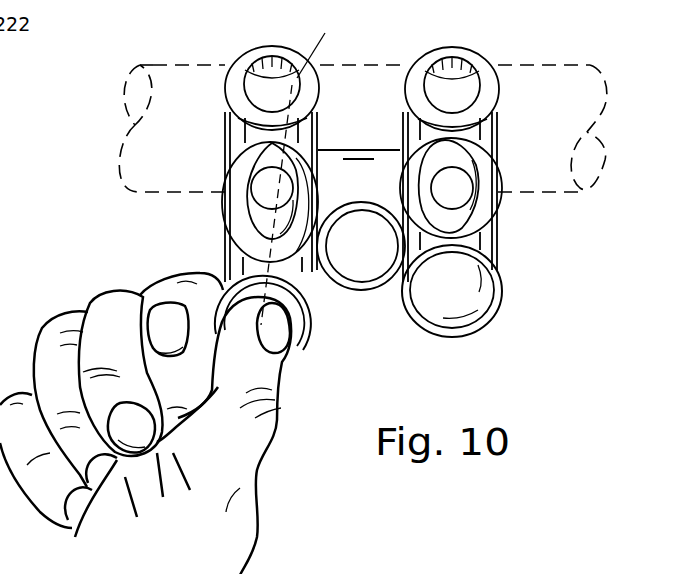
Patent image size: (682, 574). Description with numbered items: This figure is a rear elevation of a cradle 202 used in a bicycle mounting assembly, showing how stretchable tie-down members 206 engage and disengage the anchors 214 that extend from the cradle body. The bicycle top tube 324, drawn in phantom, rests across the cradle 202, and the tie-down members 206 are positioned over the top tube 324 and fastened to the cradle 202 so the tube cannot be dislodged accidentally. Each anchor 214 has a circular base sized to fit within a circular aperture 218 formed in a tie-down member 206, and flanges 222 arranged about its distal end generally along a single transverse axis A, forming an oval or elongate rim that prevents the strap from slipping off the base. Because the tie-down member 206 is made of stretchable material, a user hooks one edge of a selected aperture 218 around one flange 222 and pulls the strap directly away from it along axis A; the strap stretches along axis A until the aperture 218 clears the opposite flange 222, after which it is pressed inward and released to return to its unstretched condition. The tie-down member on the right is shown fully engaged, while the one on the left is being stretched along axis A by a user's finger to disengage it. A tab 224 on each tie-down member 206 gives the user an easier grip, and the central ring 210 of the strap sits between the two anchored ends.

The cradle 202 is at (368, 148).
The tie-down member 206 is at (258, 50).
The central ring 210 is at (359, 292).
The anchor 214 is at (250, 184).
The circular aperture 218 is at (462, 88).
The flange 222 is at (258, 216).
The tab 224 is at (295, 340).
The top tube 324 is at (562, 64).
The transverse axis A is at (327, 33).